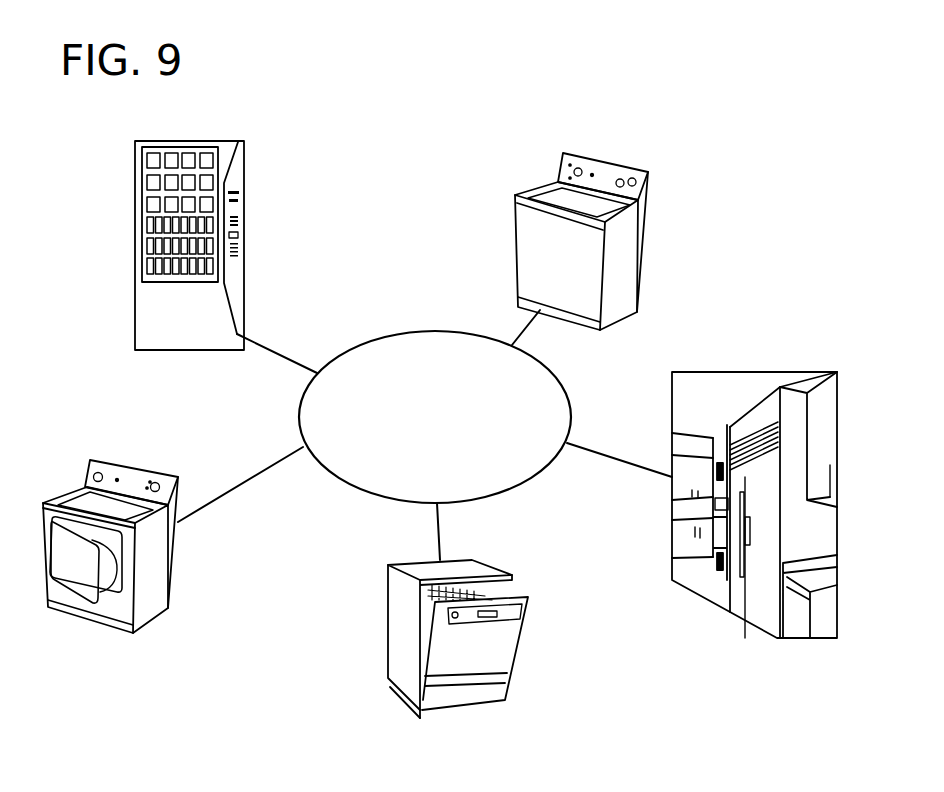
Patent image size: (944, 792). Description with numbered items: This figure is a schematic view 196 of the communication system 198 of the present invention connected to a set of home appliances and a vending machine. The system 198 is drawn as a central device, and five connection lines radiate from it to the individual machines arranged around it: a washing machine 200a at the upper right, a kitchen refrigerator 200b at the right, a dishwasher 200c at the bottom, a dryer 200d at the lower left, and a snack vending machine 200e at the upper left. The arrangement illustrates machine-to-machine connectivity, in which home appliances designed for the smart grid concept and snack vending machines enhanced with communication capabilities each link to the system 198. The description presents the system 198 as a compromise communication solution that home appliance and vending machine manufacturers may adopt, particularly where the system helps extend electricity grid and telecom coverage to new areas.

The schematic view 196 is at (723, 194).
The system 198 is at (425, 348).
The appliance 200a is at (607, 162).
The appliance 200b is at (753, 370).
The appliance 200c is at (500, 565).
The appliance 200d is at (175, 560).
The vending machine 200e is at (238, 182).